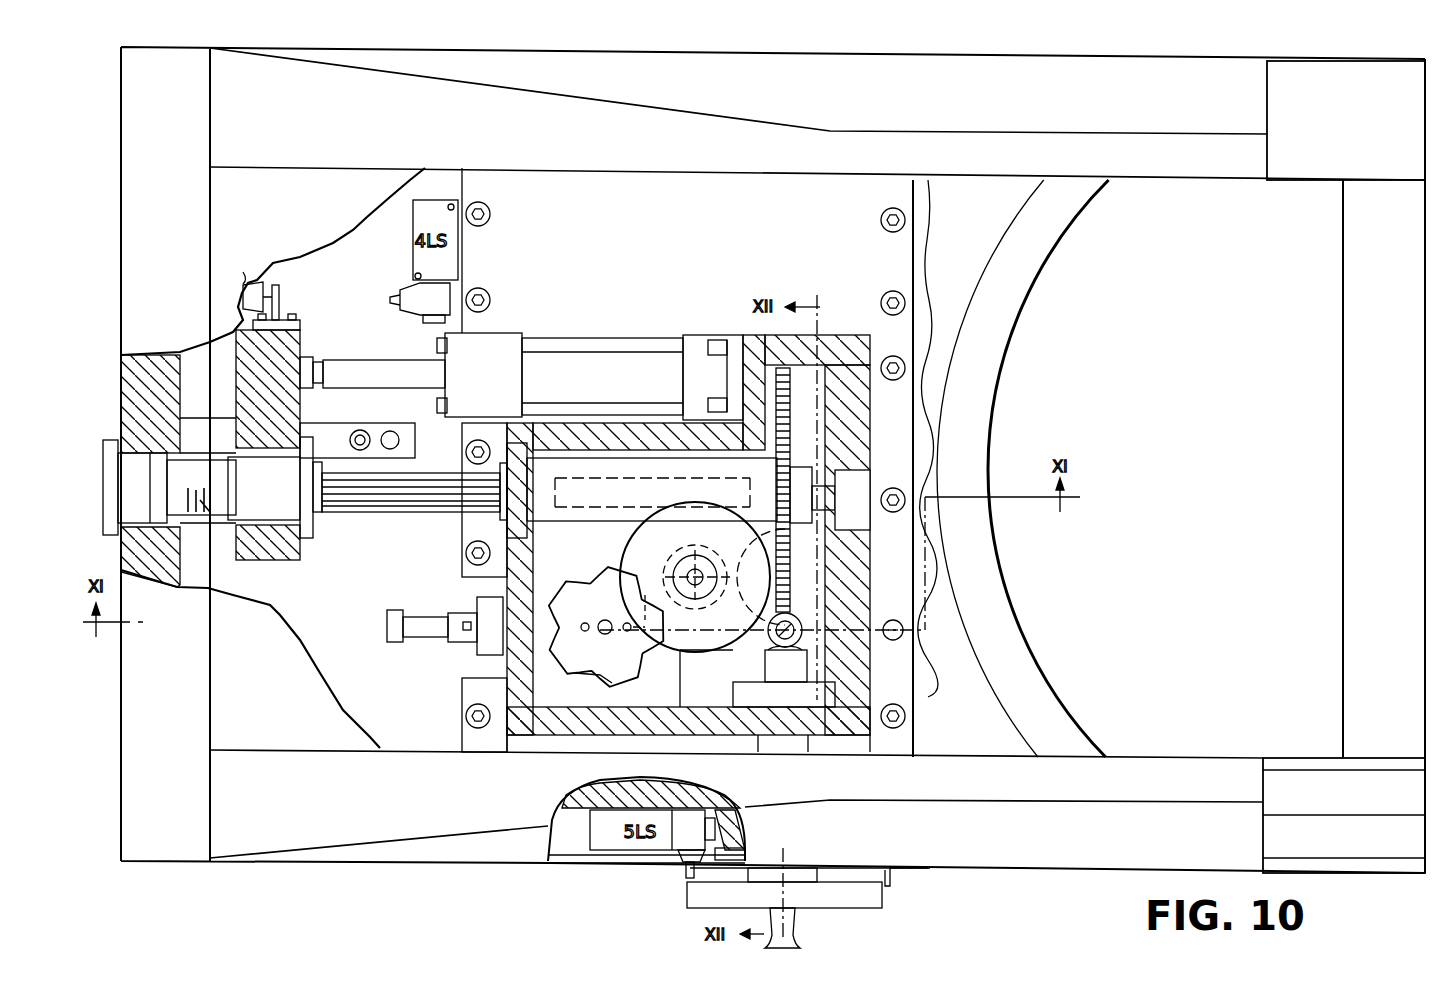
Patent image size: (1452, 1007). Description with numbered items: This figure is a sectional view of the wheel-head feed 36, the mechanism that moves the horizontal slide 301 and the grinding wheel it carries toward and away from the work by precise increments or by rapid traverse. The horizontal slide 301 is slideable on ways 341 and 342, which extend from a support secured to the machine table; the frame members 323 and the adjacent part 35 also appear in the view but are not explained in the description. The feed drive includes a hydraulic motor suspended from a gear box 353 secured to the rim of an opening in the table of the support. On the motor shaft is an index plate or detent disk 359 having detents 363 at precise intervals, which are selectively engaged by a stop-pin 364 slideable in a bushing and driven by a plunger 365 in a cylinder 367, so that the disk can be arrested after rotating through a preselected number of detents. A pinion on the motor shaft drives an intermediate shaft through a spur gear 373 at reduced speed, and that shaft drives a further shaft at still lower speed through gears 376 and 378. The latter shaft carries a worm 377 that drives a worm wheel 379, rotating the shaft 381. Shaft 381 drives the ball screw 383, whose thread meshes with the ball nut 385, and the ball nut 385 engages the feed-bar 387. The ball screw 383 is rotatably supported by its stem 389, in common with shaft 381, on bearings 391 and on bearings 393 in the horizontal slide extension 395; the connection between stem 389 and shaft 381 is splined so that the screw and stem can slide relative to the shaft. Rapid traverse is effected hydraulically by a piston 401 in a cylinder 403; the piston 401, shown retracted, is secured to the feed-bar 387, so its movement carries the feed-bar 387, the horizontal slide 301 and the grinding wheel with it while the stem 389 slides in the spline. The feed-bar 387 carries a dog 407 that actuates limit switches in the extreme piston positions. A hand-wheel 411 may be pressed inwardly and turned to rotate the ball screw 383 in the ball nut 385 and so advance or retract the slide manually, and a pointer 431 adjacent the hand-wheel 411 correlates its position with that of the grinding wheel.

The frame beam 323 is at (1203, 132).
The way 342 is at (1335, 163).
The way 341 is at (1396, 778).
The turret 35 is at (1348, 473).
The wheel-head feed 36 is at (598, 329).
The horizontal slide 301 is at (278, 896).
The horizontal slide extension 395 is at (152, 358).
The bearings 393 is at (130, 465).
The ball screw 383 is at (210, 518).
The ball nut 385 is at (312, 530).
The feed-bar 387 is at (272, 555).
The stem 389 is at (440, 500).
The bearings 391 is at (505, 515).
The shaft 381 is at (610, 522).
The worm wheel 379 is at (771, 490).
The gear 376 is at (665, 572).
The gear 378 is at (770, 566).
The worm 377 is at (768, 645).
The spur gear 373 is at (700, 658).
The index plate or detent disk 359 is at (560, 597).
The detents 363 is at (613, 628).
The stop-pin 364 is at (572, 678).
The plunger 365 is at (420, 638).
The cylinder 367 is at (390, 612).
The piston 401 is at (402, 362).
The cylinder 403 is at (573, 336).
The dog 407 is at (281, 298).
The hand-wheel 411 is at (688, 898).
The pointer 431 is at (920, 870).
The gear box 353 is at (850, 745).